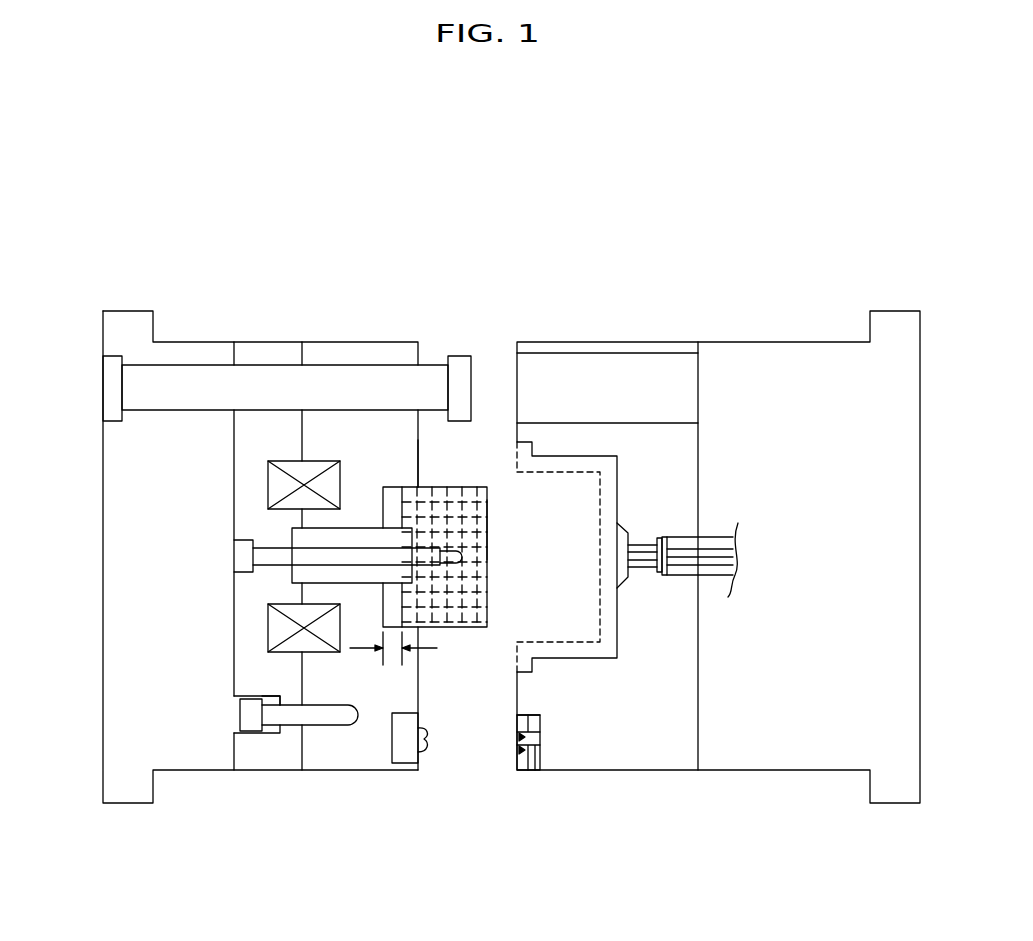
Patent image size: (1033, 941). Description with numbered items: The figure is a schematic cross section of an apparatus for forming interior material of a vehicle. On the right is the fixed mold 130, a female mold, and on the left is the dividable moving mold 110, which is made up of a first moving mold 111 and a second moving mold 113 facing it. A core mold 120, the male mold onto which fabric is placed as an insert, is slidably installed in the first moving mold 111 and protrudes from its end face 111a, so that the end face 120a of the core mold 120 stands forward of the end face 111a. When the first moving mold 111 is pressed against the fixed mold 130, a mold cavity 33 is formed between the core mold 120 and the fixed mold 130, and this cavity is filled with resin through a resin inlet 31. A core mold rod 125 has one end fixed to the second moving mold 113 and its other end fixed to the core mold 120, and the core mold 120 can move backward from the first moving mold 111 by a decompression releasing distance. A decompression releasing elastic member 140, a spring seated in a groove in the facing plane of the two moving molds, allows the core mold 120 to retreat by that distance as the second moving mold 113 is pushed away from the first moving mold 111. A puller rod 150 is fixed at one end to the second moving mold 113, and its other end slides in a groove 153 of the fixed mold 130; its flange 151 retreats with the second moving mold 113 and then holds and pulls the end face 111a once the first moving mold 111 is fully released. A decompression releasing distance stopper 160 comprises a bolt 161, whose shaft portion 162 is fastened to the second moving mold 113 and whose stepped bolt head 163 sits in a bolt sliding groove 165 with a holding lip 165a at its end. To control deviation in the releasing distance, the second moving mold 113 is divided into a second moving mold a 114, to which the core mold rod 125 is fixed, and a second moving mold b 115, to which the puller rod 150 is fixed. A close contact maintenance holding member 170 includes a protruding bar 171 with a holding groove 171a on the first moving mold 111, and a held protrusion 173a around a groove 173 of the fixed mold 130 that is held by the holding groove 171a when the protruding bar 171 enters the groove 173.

The dividable moving mold 110 is at (305, 451).
The first moving mold 111 is at (347, 350).
The end face of the first moving mold 111a is at (420, 454).
The second moving mold 113 is at (202, 250).
The second moving mold a 114 is at (270, 353).
The second moving mold b 115 is at (122, 328).
The core mold 120 is at (467, 584).
The end face of the core mold 120a is at (488, 530).
The core mold rod 125 is at (275, 558).
The fixed mold 130 is at (718, 504).
The decompression releasing elastic member 140 is at (282, 483).
The puller rod 150 is at (291, 325).
The flange of the puller rod 151 is at (458, 365).
The groove 153 is at (623, 403).
The decompression releasing distance stopper 160 is at (290, 787).
The bolt 161 is at (299, 778).
The shaft portion 162 is at (323, 720).
The stepped bolt head 163 is at (253, 733).
The bolt sliding groove 165 is at (290, 765).
The holding lip 165a is at (280, 697).
The close contact maintenance holding member 170 is at (466, 765).
The protruding bar 171 is at (436, 752).
The holding groove 171a is at (428, 730).
The groove of the fixed mold 173 is at (501, 740).
The held protrusion 173a is at (518, 733).
The resin inlet 31 is at (733, 556).
The mold cavity 33 is at (608, 492).